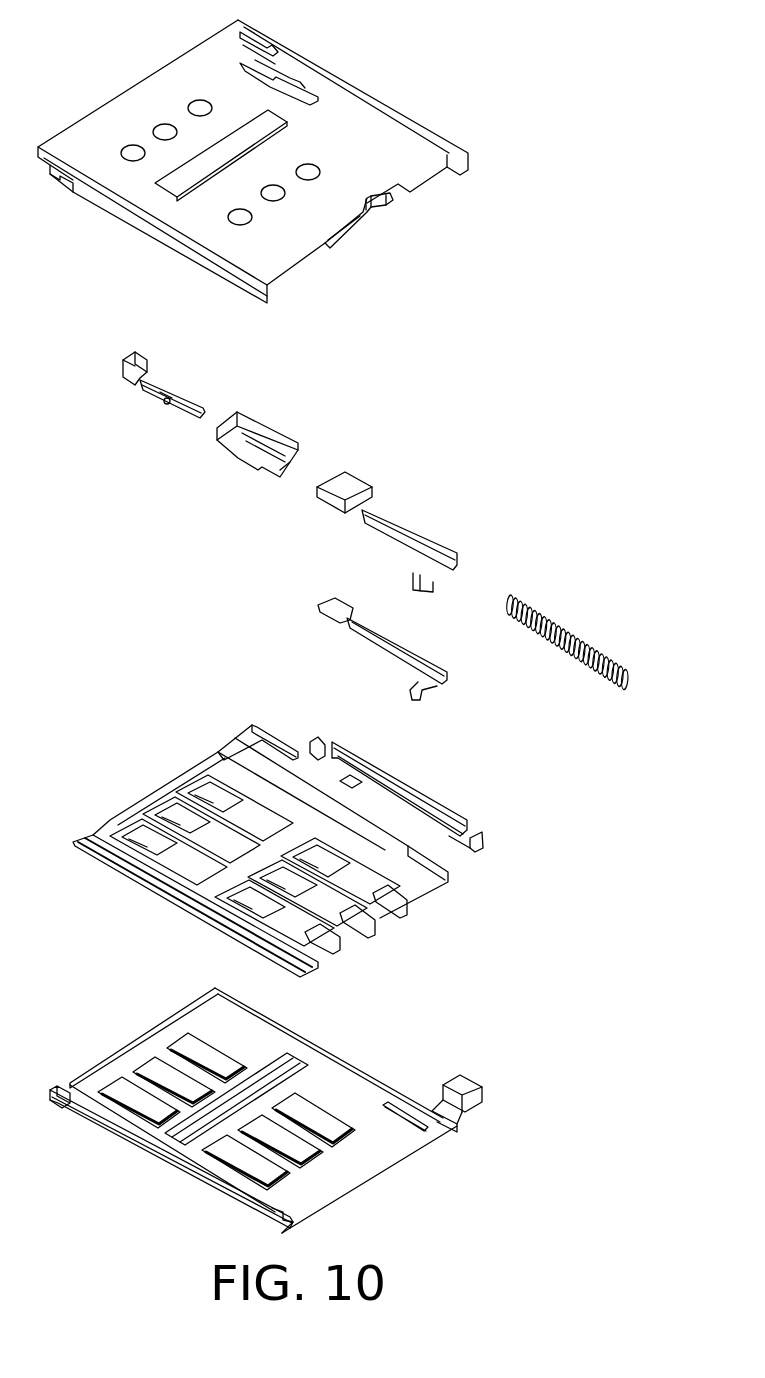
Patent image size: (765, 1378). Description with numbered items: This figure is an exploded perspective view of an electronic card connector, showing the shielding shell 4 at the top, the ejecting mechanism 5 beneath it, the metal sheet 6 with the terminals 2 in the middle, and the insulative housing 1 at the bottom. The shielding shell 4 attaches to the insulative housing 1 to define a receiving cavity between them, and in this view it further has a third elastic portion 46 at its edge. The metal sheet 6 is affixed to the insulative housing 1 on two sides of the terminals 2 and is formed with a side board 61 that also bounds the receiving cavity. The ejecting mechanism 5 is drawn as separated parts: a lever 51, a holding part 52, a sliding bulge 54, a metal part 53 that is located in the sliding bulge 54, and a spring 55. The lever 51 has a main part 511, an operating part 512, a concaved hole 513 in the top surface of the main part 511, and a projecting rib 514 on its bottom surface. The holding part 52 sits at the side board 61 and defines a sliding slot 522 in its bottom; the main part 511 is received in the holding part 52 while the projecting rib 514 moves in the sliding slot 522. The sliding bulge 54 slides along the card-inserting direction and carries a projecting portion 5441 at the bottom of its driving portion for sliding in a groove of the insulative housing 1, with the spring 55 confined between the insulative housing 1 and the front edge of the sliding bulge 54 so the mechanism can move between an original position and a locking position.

The insulative housing 1 is at (370, 1040).
The terminals 2 is at (203, 790).
The shielding shell 4 is at (385, 62).
The third elastic portion 46 is at (364, 214).
The ejecting mechanism 5 is at (670, 640).
The lever 51 is at (165, 388).
The main part 511 is at (197, 417).
The operating part 512 is at (133, 355).
The concaved hole 513 is at (165, 392).
The projecting rib 514 is at (166, 405).
The holding part 52 is at (273, 437).
The sliding slot 522 is at (258, 453).
The metal part 53 is at (378, 652).
The sliding bulge 54 is at (390, 527).
The projecting portion 5441 is at (413, 587).
The spring 55 is at (567, 627).
The metal sheet 6 is at (447, 853).
The side board 61 is at (277, 733).